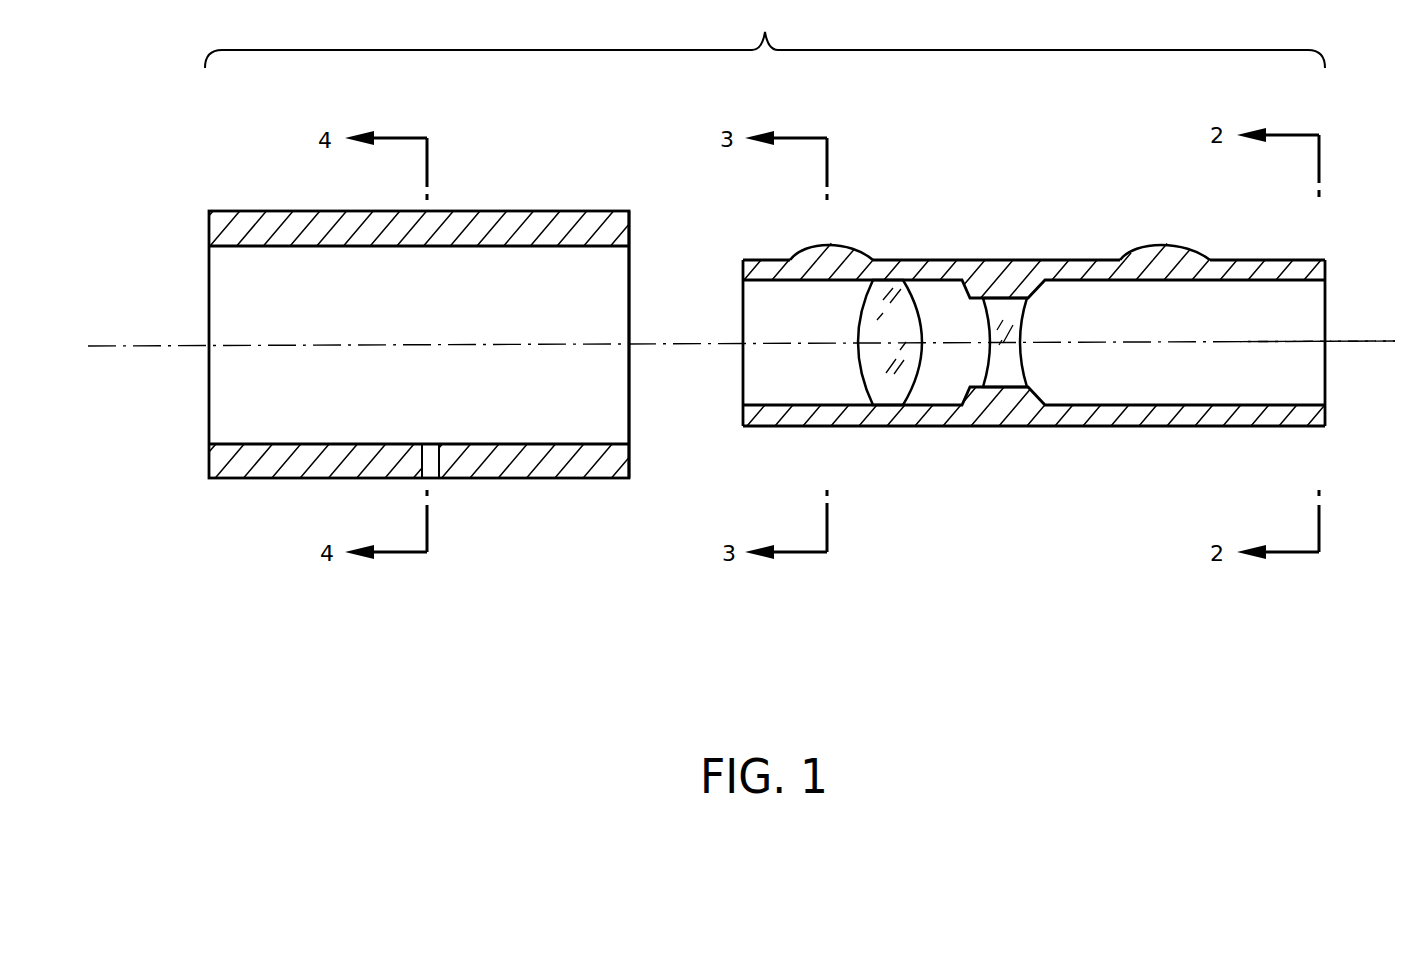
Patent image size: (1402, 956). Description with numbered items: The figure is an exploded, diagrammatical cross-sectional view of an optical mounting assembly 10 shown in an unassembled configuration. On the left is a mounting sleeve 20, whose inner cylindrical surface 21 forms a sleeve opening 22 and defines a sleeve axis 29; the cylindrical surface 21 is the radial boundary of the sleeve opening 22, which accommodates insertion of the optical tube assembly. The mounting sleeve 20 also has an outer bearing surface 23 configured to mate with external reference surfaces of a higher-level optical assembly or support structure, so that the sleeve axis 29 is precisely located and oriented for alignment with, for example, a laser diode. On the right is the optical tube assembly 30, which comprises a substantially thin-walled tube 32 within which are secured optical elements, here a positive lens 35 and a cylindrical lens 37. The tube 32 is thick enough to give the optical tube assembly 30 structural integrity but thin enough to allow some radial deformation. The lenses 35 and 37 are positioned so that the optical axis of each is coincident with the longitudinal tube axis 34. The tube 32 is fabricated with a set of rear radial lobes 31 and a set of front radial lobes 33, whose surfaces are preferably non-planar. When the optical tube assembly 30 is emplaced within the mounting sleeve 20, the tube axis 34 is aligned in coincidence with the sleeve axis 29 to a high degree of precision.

The optical mounting assembly 10 is at (765, 34).
The mounting sleeve 20 is at (423, 358).
The inner cylindrical surface 21 is at (250, 247).
The sleeve opening 22 is at (613, 285).
The outer bearing surface 23 is at (533, 479).
The sleeve axis 29 is at (167, 355).
The optical tube assembly 30 is at (1046, 339).
The rear radial lobes 31 is at (852, 245).
The thin-walled tube 32 is at (1328, 256).
The front radial lobes 33 is at (1143, 245).
The longitudinal tube axis 34 is at (1330, 350).
The positive lens 35 is at (860, 380).
The cylindrical lens 37 is at (1024, 360).